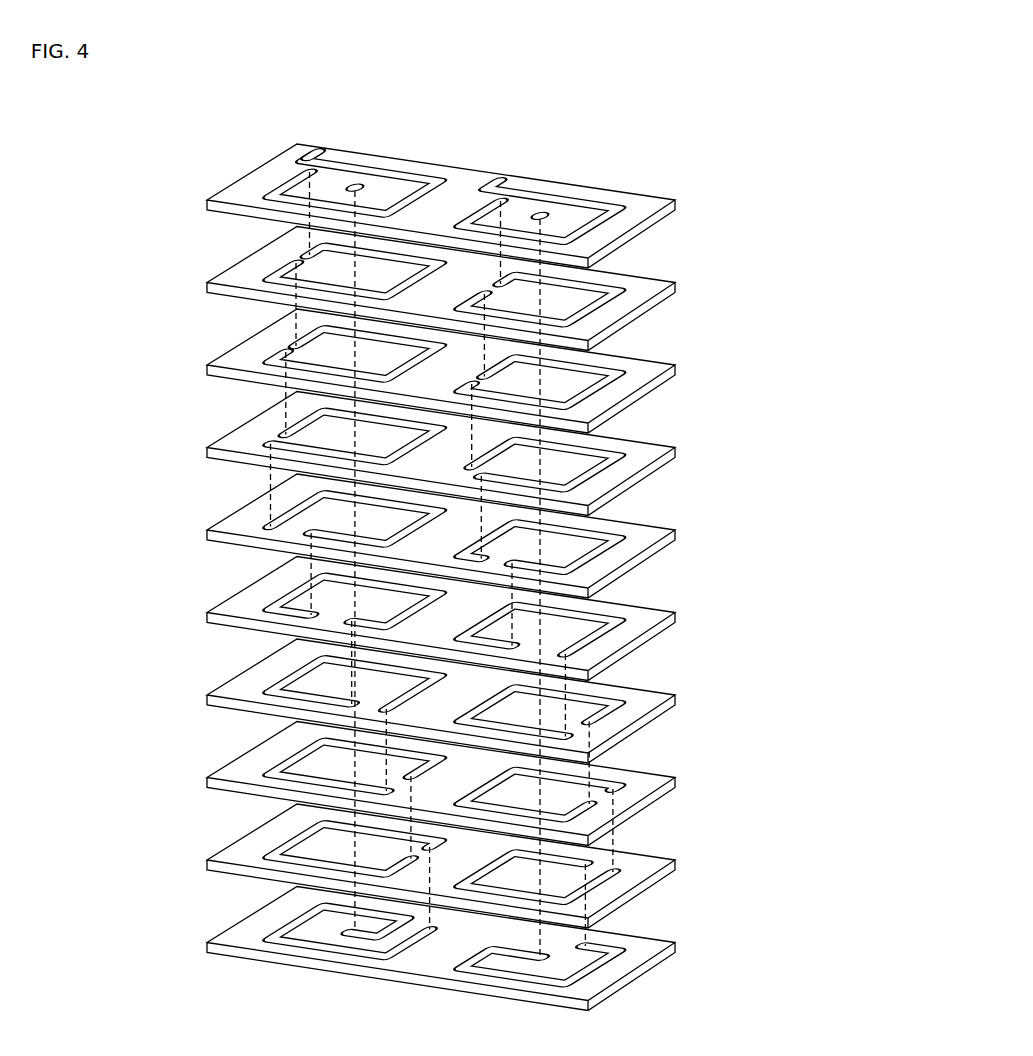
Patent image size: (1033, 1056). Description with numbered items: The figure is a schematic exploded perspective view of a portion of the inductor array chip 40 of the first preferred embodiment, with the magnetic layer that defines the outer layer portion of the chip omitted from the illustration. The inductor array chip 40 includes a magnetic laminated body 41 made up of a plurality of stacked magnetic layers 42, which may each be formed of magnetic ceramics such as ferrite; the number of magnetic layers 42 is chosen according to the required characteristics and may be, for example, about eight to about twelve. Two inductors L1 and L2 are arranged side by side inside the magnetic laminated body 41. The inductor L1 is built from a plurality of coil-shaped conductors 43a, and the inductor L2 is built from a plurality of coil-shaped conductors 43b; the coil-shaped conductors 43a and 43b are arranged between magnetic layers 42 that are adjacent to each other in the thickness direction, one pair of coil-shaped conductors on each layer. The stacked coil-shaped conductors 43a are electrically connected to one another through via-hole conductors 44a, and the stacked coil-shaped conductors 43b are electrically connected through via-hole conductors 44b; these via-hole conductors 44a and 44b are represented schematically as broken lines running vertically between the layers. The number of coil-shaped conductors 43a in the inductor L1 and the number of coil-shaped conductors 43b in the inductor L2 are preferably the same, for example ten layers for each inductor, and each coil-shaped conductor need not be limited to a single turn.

The inductor array chip 40 is at (447, 543).
The magnetic laminated body 41 is at (484, 168).
The magnetic layer 42 is at (314, 150).
The coil-shaped conductor 43a is at (430, 180).
The coil-shaped conductor 43b is at (533, 187).
The via-hole conductor 44a is at (283, 320).
The via-hole conductor 44b is at (543, 297).
The inductor L1 is at (362, 165).
The inductor L2 is at (583, 197).